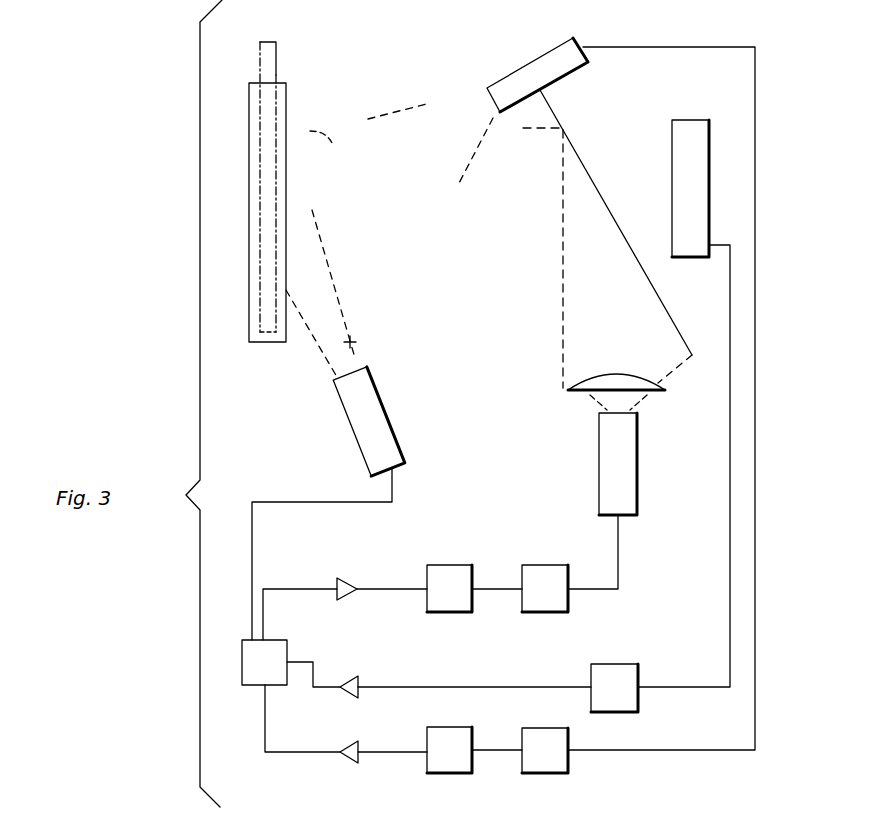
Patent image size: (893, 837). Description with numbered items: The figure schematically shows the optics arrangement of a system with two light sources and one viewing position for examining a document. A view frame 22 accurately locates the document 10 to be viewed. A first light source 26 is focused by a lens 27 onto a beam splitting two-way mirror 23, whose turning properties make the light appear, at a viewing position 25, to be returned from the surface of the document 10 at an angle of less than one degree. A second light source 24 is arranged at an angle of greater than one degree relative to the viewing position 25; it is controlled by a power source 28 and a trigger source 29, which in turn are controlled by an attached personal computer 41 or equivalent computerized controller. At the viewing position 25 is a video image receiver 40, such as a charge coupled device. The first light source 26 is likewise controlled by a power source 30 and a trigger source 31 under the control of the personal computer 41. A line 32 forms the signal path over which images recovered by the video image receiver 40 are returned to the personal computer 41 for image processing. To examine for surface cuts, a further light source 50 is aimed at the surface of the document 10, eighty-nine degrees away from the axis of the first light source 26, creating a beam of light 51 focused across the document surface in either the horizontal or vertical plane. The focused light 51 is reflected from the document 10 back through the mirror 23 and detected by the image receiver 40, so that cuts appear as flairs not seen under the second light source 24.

The document 10 is at (275, 137).
The view frame 22 is at (286, 165).
The beam splitting mirror 23 is at (605, 200).
The second light source 24 is at (522, 65).
The viewing position 25 is at (709, 127).
The first light source 26 is at (637, 472).
The lens 27 is at (637, 375).
The power source 28 is at (535, 773).
The trigger source 29 is at (452, 773).
The power source 30 is at (543, 565).
The trigger source 31 is at (443, 565).
The line 32 is at (443, 685).
The video image receiver 40 is at (615, 662).
The personal computer 41 is at (280, 637).
The further light source 50 is at (388, 417).
The beam of light 51 is at (356, 340).